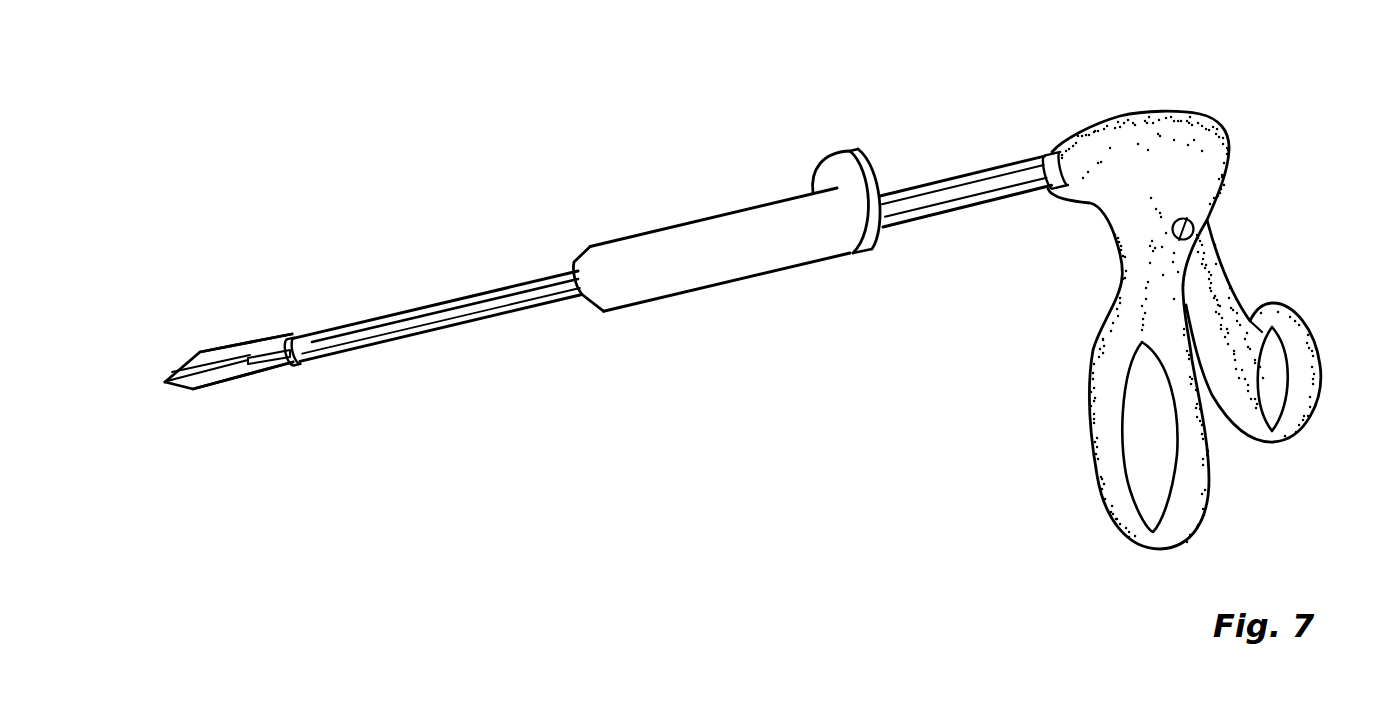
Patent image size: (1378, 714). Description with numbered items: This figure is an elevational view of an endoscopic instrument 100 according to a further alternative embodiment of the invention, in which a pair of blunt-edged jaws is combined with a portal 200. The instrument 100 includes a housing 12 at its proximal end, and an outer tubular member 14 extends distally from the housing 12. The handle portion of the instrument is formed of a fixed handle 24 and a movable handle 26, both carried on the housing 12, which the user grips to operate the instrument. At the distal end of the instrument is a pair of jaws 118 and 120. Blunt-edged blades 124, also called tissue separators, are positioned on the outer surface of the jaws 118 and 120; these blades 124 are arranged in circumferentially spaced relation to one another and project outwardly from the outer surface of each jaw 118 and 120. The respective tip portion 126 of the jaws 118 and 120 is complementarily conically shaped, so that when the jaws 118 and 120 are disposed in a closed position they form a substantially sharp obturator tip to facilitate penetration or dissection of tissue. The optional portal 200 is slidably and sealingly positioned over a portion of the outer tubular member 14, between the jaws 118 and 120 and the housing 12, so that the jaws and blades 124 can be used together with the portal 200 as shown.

The instrument 100 is at (1161, 286).
The housing 12 is at (1243, 136).
The outer tubular member 14 is at (462, 283).
The fixed handle 24 is at (1077, 433).
The movable handle 26 is at (1291, 299).
The portal 200 is at (730, 198).
The jaw 118 is at (257, 340).
The jaw 120 is at (274, 368).
The blunt-edged blades 124 is at (184, 351).
The tip portion 126 is at (148, 379).